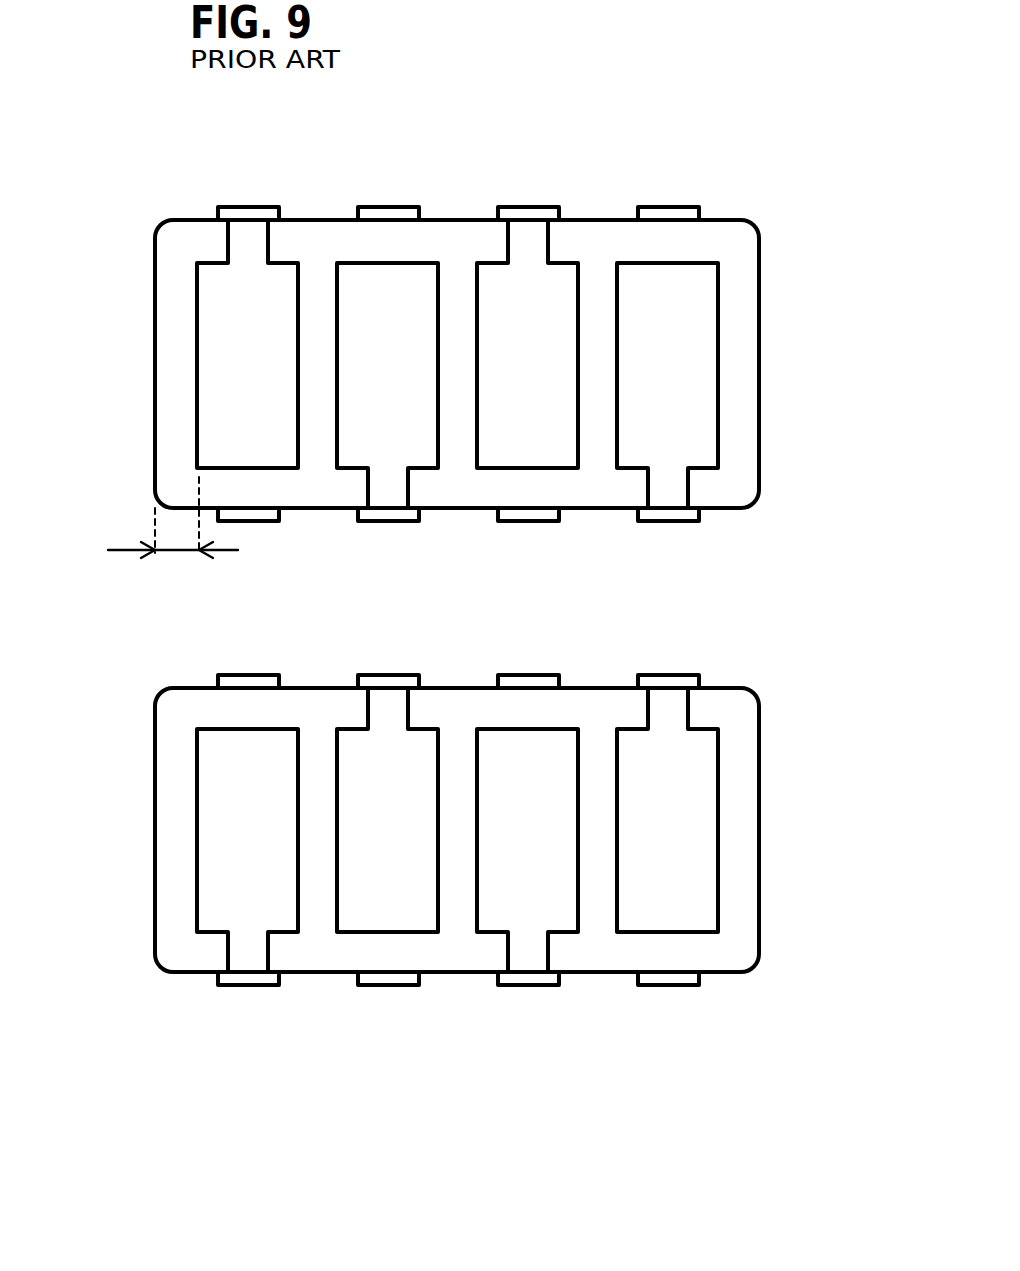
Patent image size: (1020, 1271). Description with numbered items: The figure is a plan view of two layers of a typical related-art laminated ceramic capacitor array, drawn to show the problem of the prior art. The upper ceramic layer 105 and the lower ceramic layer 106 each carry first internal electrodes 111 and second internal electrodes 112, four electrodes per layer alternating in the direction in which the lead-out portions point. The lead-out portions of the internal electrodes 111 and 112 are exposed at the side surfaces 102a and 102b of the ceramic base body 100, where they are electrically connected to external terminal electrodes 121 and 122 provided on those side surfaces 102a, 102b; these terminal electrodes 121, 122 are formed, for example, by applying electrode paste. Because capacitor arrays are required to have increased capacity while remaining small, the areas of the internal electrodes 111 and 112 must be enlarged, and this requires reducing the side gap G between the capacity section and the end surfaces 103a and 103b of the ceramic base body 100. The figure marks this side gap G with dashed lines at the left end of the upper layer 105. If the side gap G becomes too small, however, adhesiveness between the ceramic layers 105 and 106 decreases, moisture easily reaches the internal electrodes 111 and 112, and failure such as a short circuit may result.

The ceramic base body 100 is at (767, 207).
The upper ceramic layer 105 is at (748, 275).
The lower ceramic layer 106 is at (748, 760).
The side surface 102a is at (318, 220).
The side surface 102b is at (580, 508).
The end surface 103a is at (155, 408).
The end surface 103b is at (759, 405).
The first internal electrode 111 is at (220, 303).
The second internal electrode 112 is at (413, 285).
The external terminal electrode 121 is at (248, 207).
The external terminal electrode 122 is at (250, 522).
The side gap G is at (177, 555).